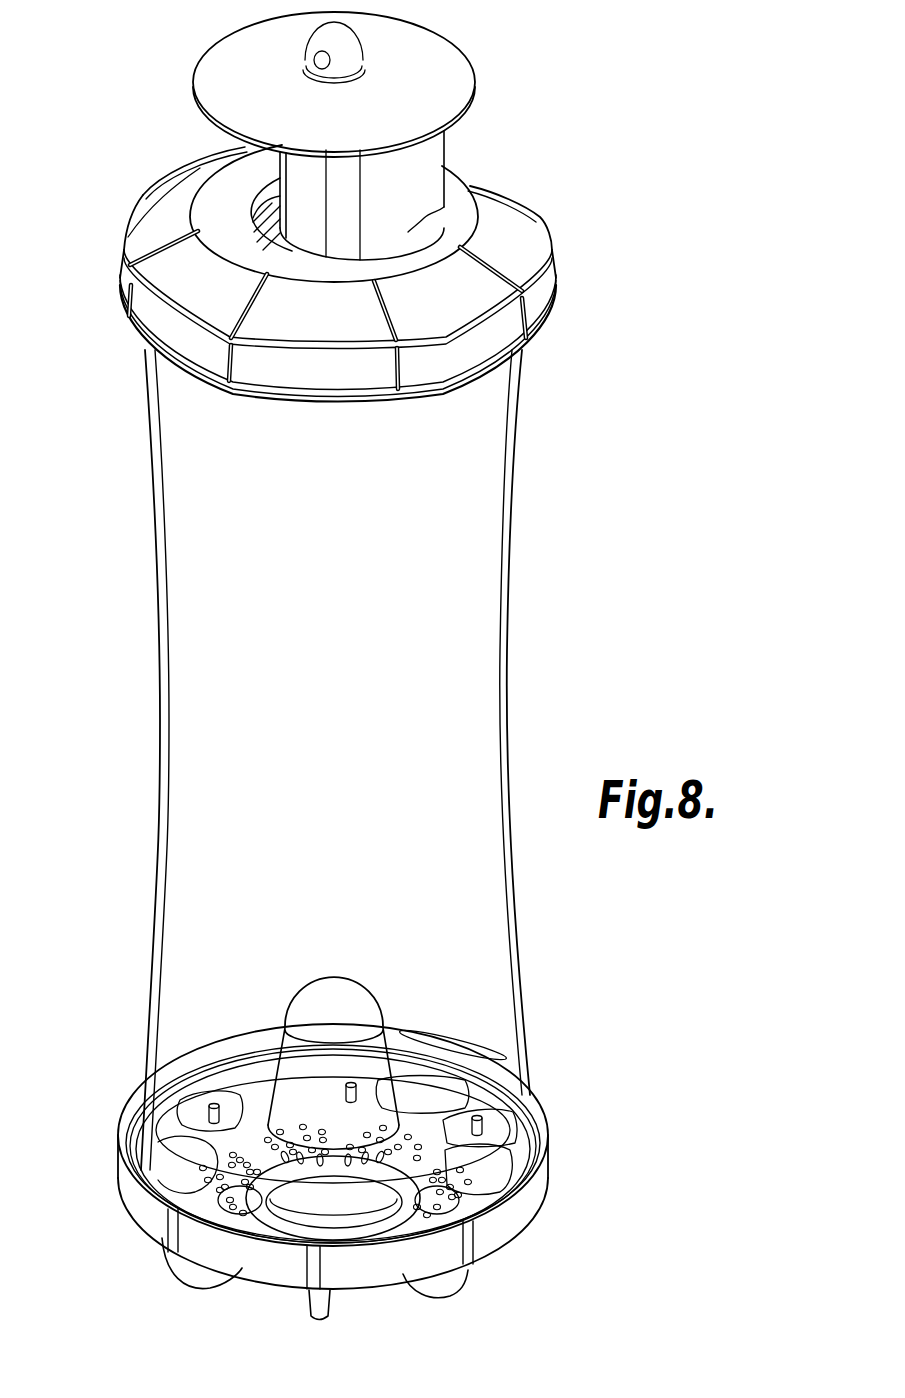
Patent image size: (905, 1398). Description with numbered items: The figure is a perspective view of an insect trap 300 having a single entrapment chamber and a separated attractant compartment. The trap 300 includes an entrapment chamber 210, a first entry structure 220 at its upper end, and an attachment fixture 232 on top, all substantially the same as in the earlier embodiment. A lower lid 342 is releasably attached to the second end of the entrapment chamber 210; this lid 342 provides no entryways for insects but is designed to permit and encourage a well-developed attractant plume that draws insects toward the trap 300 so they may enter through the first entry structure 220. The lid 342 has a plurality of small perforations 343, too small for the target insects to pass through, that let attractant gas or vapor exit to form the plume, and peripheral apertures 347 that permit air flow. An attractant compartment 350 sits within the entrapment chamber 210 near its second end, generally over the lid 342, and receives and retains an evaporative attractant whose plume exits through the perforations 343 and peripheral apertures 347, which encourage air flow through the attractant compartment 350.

The insect trap 300 is at (580, 113).
The attachment fixture 232 is at (461, 37).
The first entry structure 220 is at (547, 243).
The entrapment chamber 210 is at (508, 590).
The attractant compartment 350 is at (372, 988).
The lower lid 342 is at (513, 1217).
The perforations 343 is at (470, 1113).
The peripheral apertures 347 is at (366, 1288).